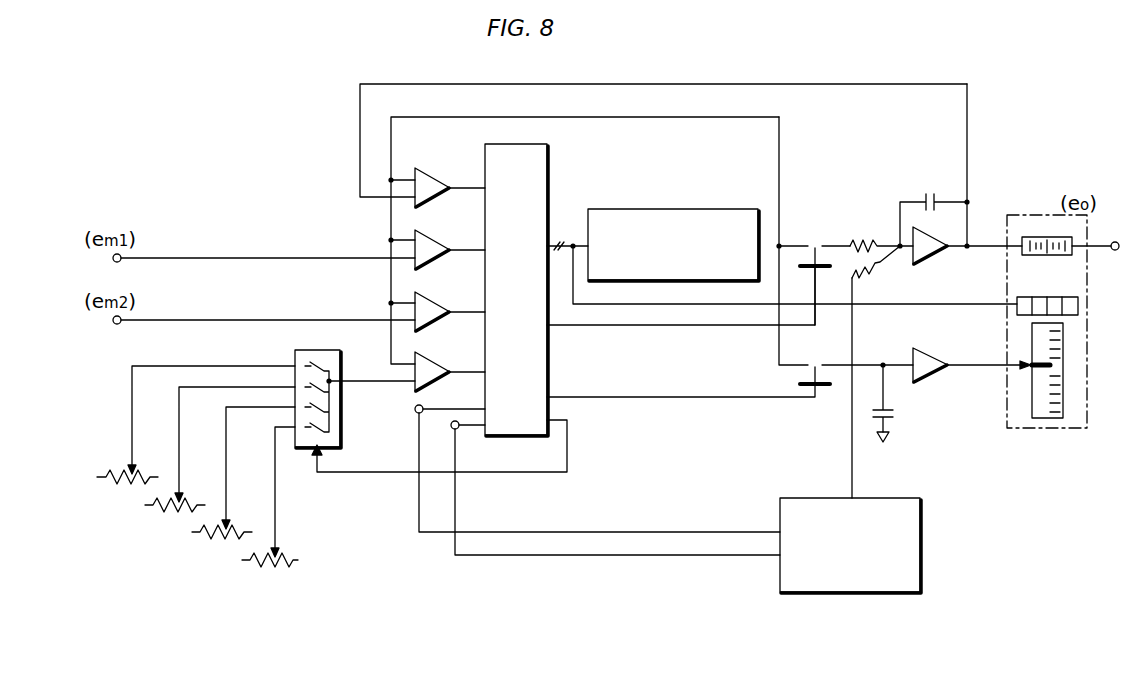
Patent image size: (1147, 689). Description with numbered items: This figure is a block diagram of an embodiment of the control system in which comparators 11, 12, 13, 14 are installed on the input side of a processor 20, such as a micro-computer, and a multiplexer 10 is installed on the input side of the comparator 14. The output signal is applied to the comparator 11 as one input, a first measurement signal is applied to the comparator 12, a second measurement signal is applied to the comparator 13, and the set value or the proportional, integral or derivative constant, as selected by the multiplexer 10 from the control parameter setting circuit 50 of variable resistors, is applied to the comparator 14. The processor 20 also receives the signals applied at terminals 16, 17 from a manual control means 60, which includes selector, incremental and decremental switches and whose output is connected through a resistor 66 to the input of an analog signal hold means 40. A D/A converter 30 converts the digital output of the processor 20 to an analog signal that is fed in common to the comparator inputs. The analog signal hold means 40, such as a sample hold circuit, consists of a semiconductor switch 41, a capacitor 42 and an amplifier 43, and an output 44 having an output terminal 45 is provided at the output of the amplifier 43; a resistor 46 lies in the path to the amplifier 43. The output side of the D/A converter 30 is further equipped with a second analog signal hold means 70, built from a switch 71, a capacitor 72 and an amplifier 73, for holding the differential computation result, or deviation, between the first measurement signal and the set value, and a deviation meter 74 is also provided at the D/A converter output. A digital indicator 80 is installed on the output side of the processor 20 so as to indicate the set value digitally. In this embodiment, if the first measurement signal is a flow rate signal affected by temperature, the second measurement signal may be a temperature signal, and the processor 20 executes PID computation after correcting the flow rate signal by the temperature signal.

The multiplexer 10 is at (340, 350).
The comparator 11 is at (432, 188).
The comparator 12 is at (432, 250).
The comparator 13 is at (432, 312).
The comparator 14 is at (432, 372).
The comparator 16 is at (414, 409).
The terminal 17 is at (451, 427).
The processor 20 is at (547, 162).
The D/A converter 30 is at (708, 210).
The analog signal hold means 40 is at (877, 162).
The semiconductor switch 41 is at (812, 262).
The capacitor 42 is at (930, 192).
The amplifier 43 is at (928, 258).
The output 44 is at (1033, 237).
The output terminal 45 is at (1115, 242).
The resistor 46 is at (862, 238).
The control parameter setting circuit 50 is at (151, 529).
The manual control means 60 is at (921, 517).
The resistor 66 is at (868, 274).
The analog signal hold means 70 is at (894, 357).
The switch 71 is at (812, 380).
The capacitor 72 is at (895, 414).
The amplifier 73 is at (930, 378).
The deviation meter 74 is at (1063, 378).
The digital indicator 80 is at (1078, 305).